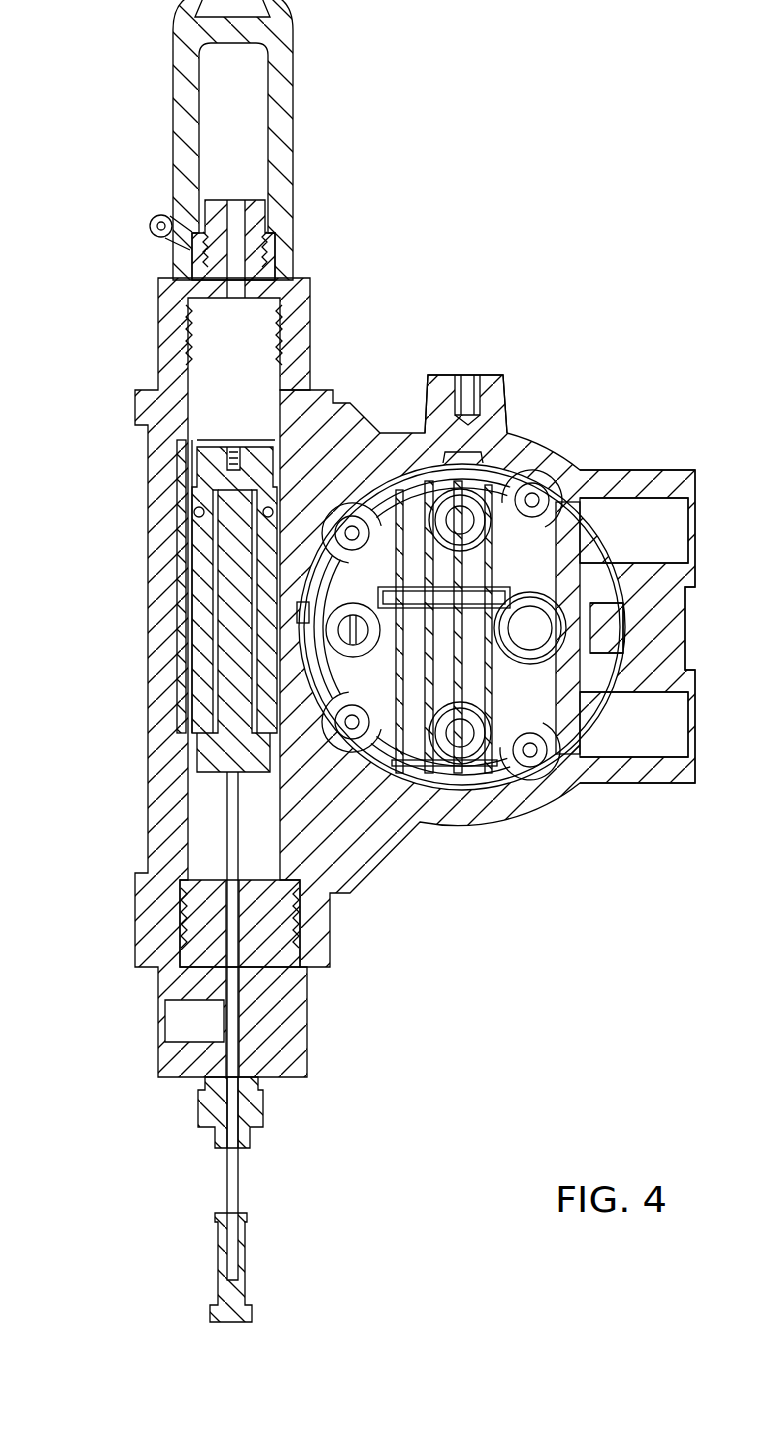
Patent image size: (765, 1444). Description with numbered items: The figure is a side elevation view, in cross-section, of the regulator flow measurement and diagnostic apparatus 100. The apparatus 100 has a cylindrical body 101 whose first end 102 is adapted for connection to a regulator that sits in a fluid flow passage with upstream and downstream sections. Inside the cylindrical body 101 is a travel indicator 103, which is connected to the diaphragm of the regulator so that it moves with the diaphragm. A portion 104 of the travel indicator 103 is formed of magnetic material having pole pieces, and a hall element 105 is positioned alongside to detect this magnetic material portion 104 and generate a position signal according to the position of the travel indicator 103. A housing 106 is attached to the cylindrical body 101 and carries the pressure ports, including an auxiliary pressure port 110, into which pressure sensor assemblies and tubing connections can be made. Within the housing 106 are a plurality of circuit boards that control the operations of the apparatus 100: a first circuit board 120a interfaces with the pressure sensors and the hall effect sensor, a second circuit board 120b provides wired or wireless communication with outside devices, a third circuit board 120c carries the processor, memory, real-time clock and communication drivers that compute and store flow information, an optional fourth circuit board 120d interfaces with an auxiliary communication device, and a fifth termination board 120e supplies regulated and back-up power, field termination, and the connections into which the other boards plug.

The regulator flow measurement and diagnostic apparatus 100 is at (474, 357).
The cylindrical body 101 is at (148, 720).
The first end 102 is at (207, 1115).
The travel indicator 103 is at (230, 827).
The magnetic material portion 104 is at (225, 547).
The hall element 105 is at (300, 607).
The housing 106 is at (618, 777).
The auxiliary pressure port 110 is at (503, 393).
The first circuit board 120a is at (390, 780).
The second circuit board 120b is at (415, 818).
The third circuit board 120c is at (470, 660).
The fourth circuit board 120d is at (548, 752).
The fifth circuit board 120e is at (540, 567).